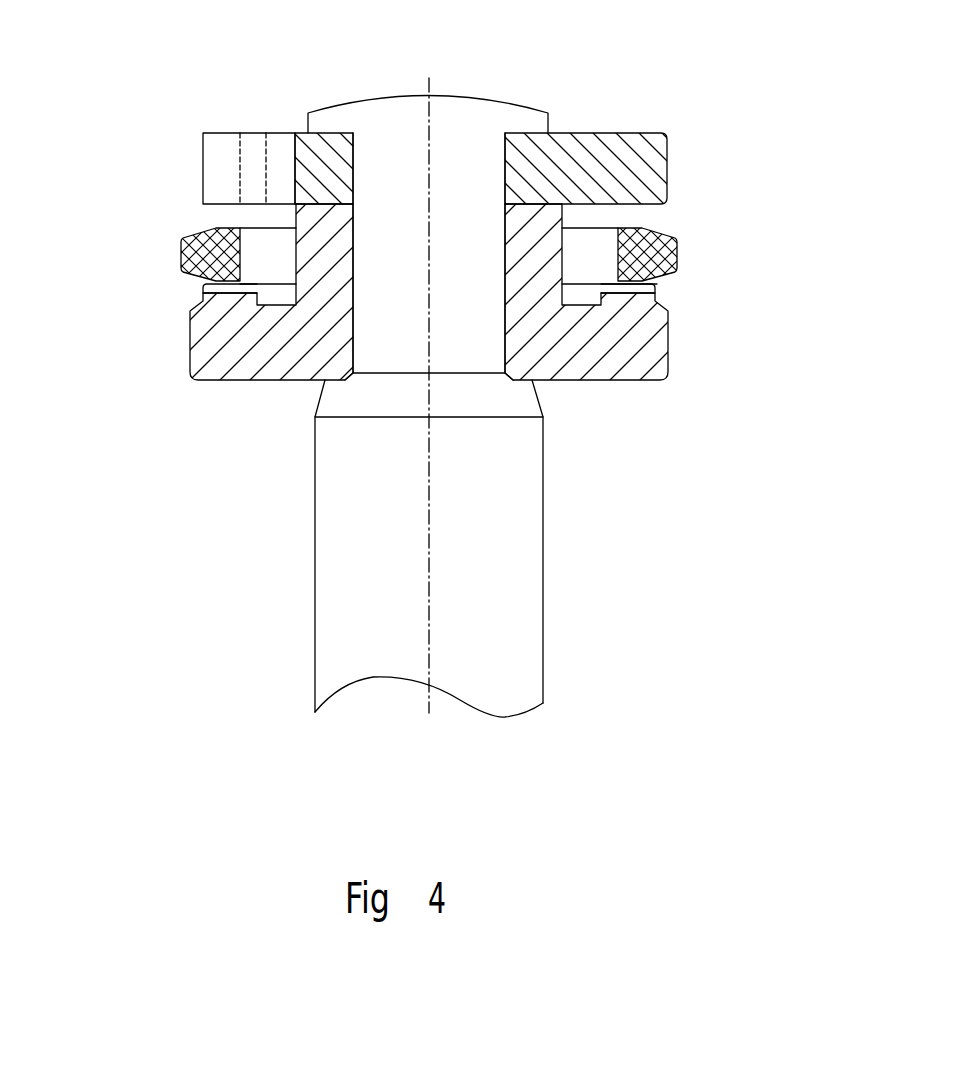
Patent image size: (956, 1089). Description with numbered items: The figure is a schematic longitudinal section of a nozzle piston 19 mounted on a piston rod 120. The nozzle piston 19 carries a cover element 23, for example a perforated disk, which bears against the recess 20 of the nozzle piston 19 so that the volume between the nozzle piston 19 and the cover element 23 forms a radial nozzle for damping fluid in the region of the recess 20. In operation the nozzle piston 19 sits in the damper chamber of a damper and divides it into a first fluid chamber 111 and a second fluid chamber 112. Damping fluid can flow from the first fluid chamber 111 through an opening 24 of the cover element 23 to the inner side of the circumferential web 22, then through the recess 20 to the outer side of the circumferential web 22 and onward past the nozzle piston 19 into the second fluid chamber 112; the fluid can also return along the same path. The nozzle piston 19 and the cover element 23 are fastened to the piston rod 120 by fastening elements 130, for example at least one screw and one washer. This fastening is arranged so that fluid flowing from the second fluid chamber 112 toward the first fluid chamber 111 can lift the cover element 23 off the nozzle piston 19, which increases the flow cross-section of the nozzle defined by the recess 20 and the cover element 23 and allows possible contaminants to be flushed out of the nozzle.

The first fluid chamber 111 is at (312, 53).
The second fluid chamber 112 is at (580, 547).
The fastening elements 130 is at (462, 98).
The nozzle piston 19 is at (190, 378).
The recess 20 is at (203, 288).
The circumferential web 22 is at (660, 294).
The cover element 23 is at (678, 253).
The opening 24 is at (592, 248).
The piston rod 120 is at (315, 635).